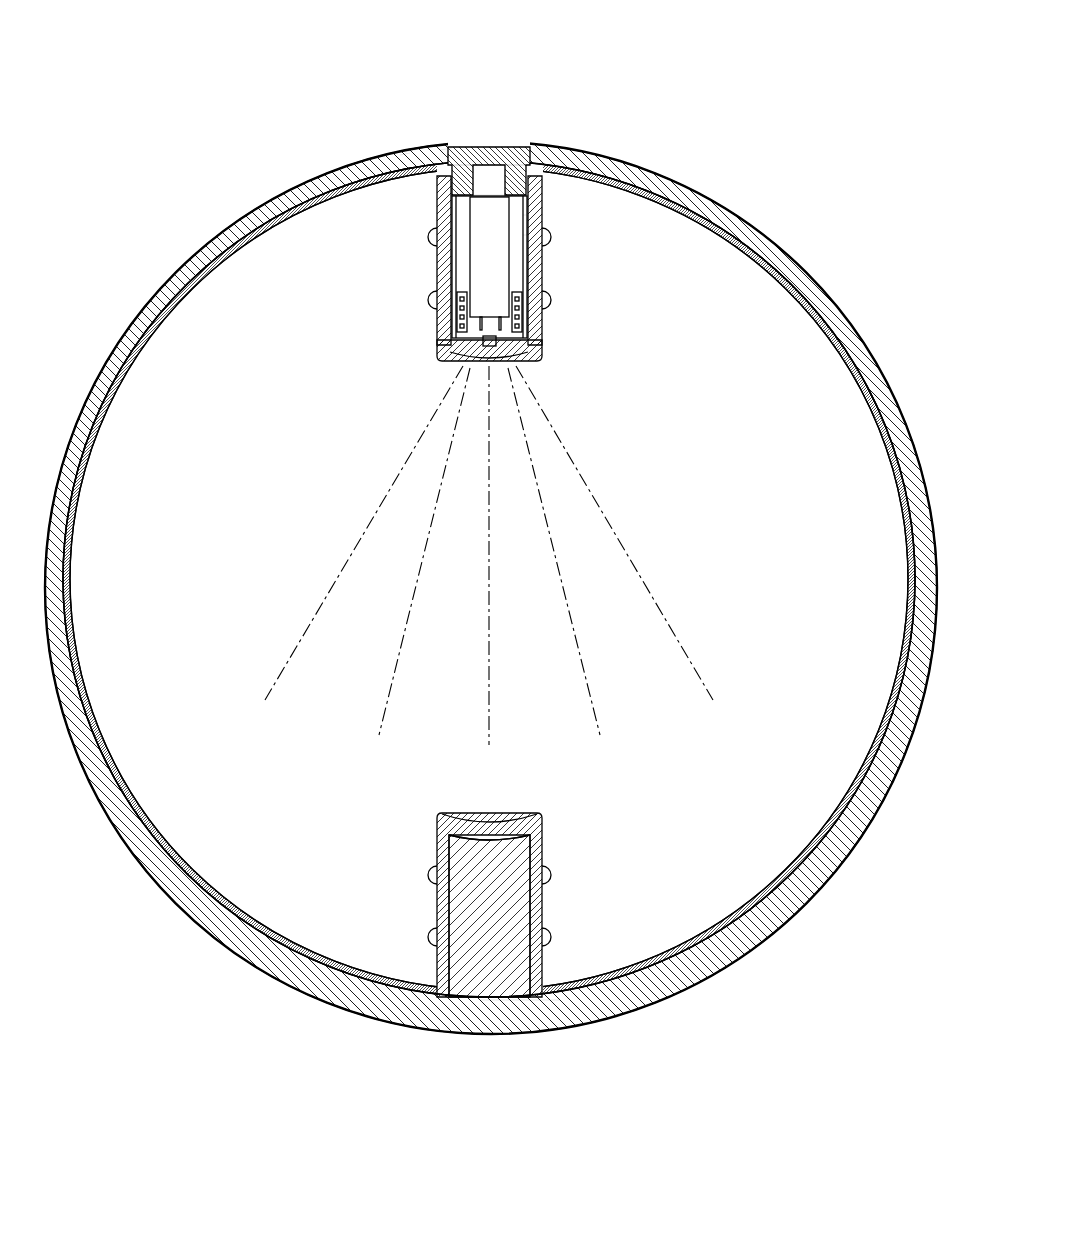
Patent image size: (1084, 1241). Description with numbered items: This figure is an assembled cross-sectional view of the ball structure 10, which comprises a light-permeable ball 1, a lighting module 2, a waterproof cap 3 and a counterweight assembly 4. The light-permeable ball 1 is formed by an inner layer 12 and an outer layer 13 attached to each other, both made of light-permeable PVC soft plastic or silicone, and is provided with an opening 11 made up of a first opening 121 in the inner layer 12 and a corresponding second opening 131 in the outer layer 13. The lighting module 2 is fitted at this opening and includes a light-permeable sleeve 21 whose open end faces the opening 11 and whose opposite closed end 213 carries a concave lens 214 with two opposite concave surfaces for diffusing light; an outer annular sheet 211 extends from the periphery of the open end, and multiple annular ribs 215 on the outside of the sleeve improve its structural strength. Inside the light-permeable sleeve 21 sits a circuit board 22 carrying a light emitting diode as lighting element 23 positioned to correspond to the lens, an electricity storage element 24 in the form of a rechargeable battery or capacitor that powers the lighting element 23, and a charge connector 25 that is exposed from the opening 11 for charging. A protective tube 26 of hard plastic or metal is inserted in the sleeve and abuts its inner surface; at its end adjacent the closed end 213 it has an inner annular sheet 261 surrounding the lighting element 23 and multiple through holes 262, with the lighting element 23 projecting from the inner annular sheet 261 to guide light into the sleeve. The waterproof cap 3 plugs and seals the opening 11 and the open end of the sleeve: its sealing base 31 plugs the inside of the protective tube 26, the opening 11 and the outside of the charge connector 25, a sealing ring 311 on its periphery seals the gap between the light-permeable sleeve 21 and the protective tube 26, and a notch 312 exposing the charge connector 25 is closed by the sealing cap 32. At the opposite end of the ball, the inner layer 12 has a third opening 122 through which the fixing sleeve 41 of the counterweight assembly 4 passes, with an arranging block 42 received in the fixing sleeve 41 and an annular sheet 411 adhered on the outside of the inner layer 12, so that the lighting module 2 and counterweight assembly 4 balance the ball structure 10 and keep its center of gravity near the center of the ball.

The light-permeable ball 1 is at (504, 565).
The ball structure 10 is at (501, 34).
The opening 11 is at (336, 50).
The inner layer 12 is at (845, 375).
The first opening 121 is at (405, 152).
The third opening 122 is at (521, 1000).
The outer layer 13 is at (816, 280).
The second opening 131 is at (455, 170).
The lighting module 2 is at (489, 435).
The light-permeable sleeve 21 is at (541, 265).
The outer annular sheet 211 is at (568, 168).
The closed end 213 is at (465, 362).
The concave lens 214 is at (481, 368).
The annular ribs 215 is at (545, 300).
The circuit board 22 is at (463, 253).
The lighting element 23 is at (493, 362).
The electricity storage element 24 is at (486, 258).
The charge connector 25 is at (488, 176).
The protective tube 26 is at (531, 204).
The inner annular sheet 261 is at (520, 360).
The through holes 262 is at (527, 224).
The waterproof cap 3 is at (598, 68).
The sealing base 31 is at (520, 150).
The sealing ring 311 is at (552, 165).
The notch 312 is at (470, 150).
The sealing cap 32 is at (503, 150).
The counterweight assembly 4 is at (554, 926).
The fixing sleeve 41 is at (540, 858).
The annular sheet 411 is at (558, 997).
The arranging block 42 is at (518, 905).